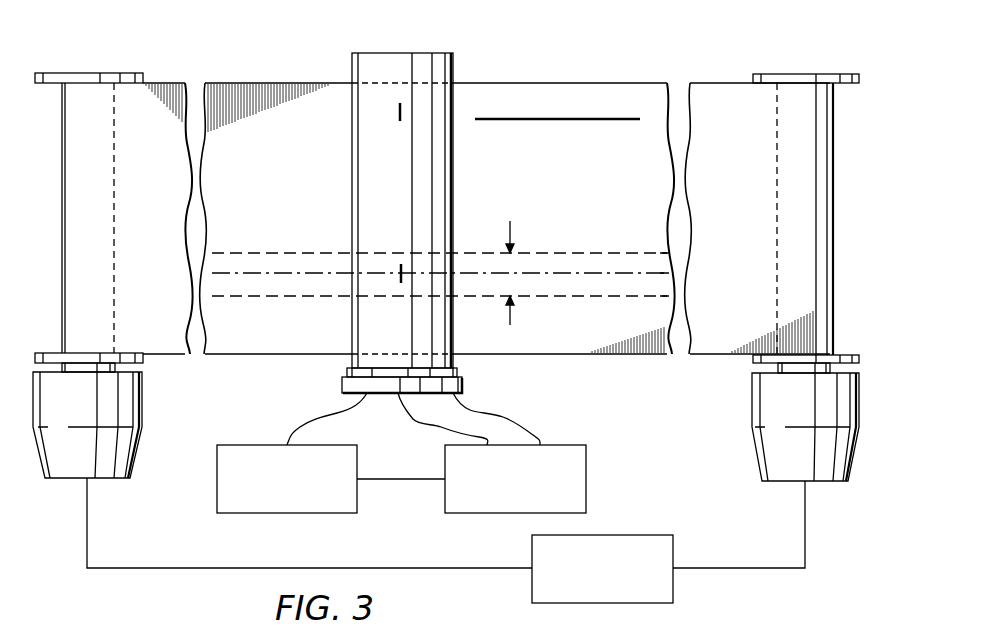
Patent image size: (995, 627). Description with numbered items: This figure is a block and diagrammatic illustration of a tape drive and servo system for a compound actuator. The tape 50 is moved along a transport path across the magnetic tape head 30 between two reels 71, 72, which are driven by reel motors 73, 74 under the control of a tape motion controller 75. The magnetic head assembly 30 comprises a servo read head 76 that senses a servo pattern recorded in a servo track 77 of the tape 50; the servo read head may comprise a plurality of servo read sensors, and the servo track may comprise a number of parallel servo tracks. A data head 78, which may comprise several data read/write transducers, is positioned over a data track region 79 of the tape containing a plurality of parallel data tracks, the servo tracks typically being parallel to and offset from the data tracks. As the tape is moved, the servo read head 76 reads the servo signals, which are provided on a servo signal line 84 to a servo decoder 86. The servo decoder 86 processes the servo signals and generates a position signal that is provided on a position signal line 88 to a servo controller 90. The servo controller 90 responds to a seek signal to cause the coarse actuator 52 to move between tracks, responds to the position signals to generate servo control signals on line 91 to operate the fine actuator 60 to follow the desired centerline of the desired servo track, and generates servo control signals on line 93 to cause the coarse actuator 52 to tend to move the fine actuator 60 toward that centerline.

The magnetic tape head 30 is at (597, 273).
The tape 50 is at (268, 83).
The coarse actuator 52 is at (462, 388).
The fine actuator 60 is at (460, 371).
The reel 71 is at (78, 73).
The reel 72 is at (810, 74).
The reel motor 73 is at (66, 478).
The reel motor 74 is at (819, 481).
The tape motion controller 75 is at (673, 589).
The servo read head 76 is at (401, 262).
The servo track 77 is at (510, 221).
The data head 78 is at (398, 119).
The data track region 79 is at (579, 119).
The servo signal line 84 is at (304, 426).
The servo decoder 86 is at (217, 485).
The position signal line 88 is at (407, 480).
The servo controller 90 is at (586, 481).
The servo control signal line 91 is at (413, 430).
The servo control signal line 93 is at (528, 430).